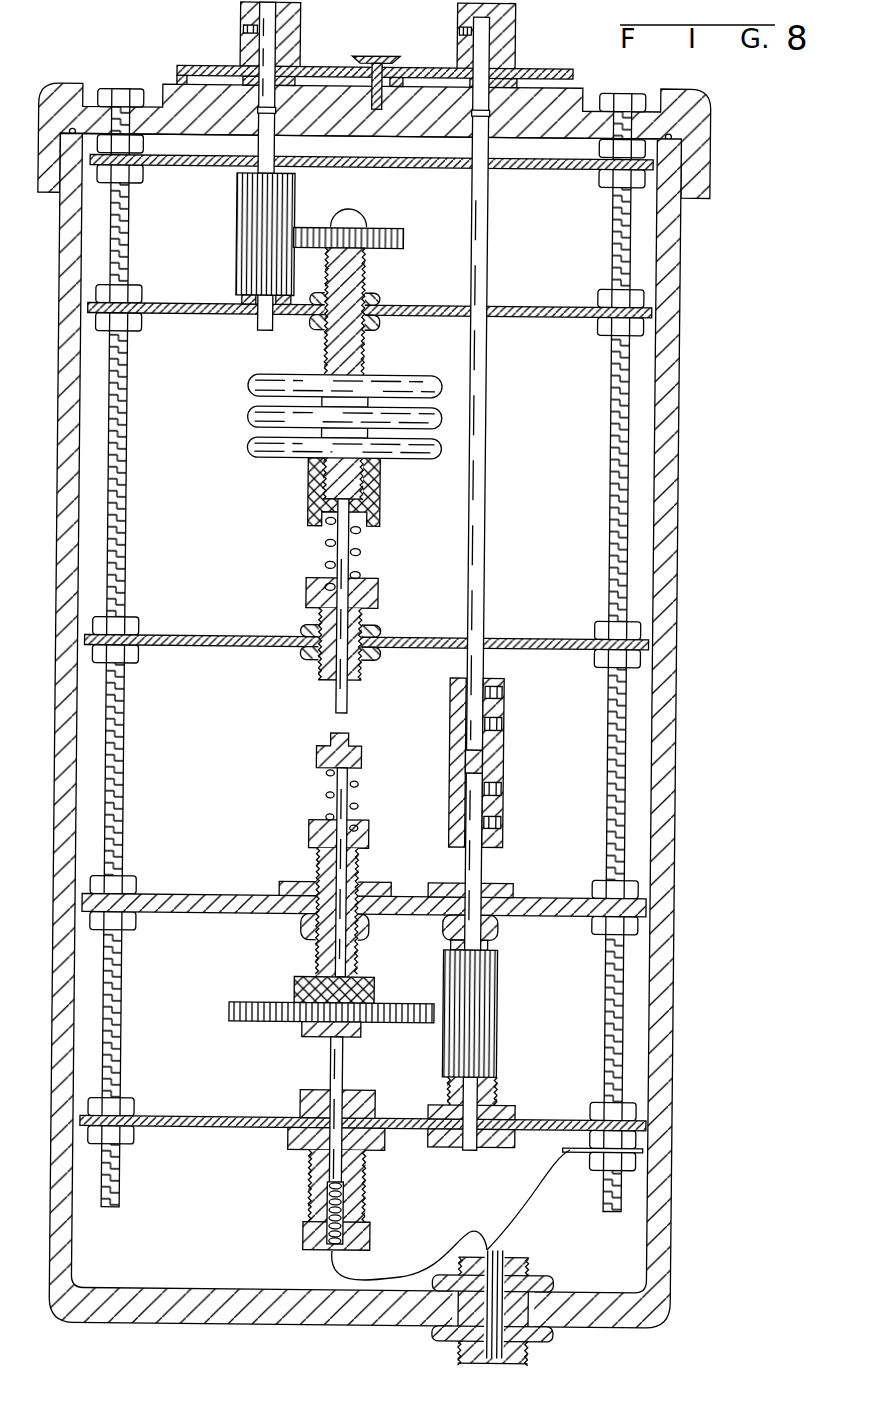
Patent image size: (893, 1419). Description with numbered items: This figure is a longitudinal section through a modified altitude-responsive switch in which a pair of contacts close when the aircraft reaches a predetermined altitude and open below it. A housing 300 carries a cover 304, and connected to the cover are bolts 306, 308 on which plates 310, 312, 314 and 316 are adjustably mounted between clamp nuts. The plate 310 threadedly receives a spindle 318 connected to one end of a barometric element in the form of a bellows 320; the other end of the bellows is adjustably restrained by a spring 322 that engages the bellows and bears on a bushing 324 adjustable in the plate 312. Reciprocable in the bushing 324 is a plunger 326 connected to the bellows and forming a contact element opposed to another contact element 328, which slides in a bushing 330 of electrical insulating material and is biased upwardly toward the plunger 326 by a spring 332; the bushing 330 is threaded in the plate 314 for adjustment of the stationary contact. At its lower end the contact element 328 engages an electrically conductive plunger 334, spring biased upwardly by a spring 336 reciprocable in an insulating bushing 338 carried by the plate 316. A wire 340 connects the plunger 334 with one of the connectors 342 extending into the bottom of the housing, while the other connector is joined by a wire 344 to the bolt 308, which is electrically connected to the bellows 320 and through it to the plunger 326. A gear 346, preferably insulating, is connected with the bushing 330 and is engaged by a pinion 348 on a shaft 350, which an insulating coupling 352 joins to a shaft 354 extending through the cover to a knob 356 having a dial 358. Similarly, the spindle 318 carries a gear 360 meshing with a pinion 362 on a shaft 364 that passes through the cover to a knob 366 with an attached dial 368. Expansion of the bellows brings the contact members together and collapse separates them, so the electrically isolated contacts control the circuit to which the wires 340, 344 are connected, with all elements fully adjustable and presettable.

The housing 300 is at (680, 388).
The cover 304 is at (404, 141).
The bolt 306 is at (128, 230).
The bolt 308 is at (612, 228).
The plate 310 is at (212, 316).
The plate 312 is at (222, 637).
The plate 314 is at (243, 897).
The plate 316 is at (223, 1120).
The spindle 318 is at (363, 277).
The bellows 320 is at (250, 382).
The spring 322 is at (360, 552).
The bushing 324 is at (378, 587).
The plunger 326 is at (342, 537).
The contact element 328 is at (350, 735).
The bushing 330 is at (371, 835).
The shaft with spring 332 is at (352, 798).
The plunger 334 is at (340, 1067).
The spring 336 is at (343, 1199).
The bushing 338 is at (308, 1097).
The wire 340 is at (405, 1260).
The connectors 342 is at (463, 1362).
The wire 344 is at (498, 1250).
The gear 346 is at (377, 980).
The pinion 348 is at (487, 1000).
The shaft 350 is at (472, 863).
The insulating coupling 352 is at (503, 753).
The shaft 354 is at (478, 558).
The knob 356 is at (516, 18).
The dial 358 is at (530, 70).
The gear 360 is at (380, 230).
The pinion 362 is at (240, 203).
The shaft 364 is at (277, 140).
The knob 366 is at (298, 21).
The dial 368 is at (312, 67).